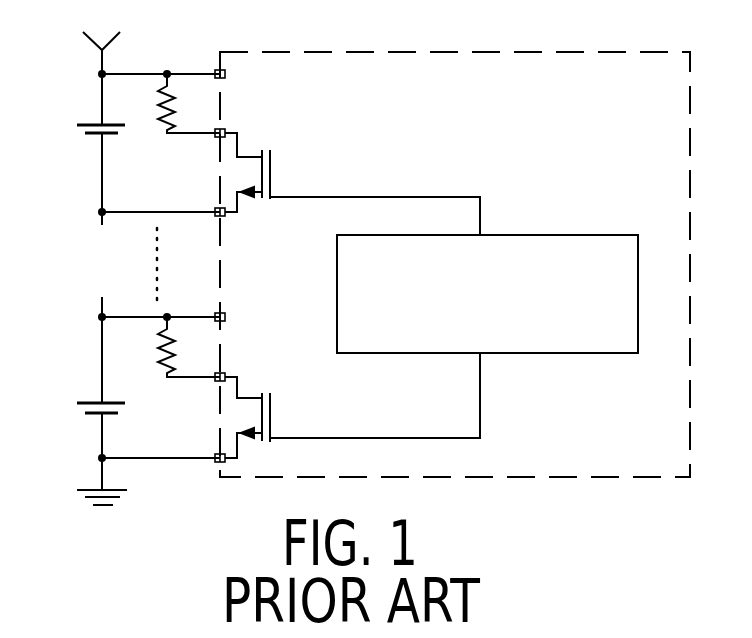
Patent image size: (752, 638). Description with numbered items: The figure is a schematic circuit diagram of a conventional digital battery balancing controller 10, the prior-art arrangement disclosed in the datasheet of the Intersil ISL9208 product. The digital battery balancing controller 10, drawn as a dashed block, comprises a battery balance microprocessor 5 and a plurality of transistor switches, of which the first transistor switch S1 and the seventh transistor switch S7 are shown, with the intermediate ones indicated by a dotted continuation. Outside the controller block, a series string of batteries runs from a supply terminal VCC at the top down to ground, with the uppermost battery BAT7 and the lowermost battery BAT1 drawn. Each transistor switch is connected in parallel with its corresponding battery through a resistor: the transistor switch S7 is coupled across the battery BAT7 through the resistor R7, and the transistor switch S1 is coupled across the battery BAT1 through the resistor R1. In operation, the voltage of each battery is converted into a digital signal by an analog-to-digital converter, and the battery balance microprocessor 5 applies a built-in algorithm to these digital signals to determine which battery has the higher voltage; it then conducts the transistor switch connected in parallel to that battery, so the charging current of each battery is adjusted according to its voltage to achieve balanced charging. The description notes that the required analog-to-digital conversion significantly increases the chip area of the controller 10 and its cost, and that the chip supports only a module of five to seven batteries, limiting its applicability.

The digital battery balancing controller 10 is at (613, 57).
The battery balance microprocessor 5 is at (483, 242).
The supply voltage terminal VCC is at (103, 37).
The battery BAT7 is at (85, 149).
The battery BAT1 is at (85, 393).
The resistor R7 is at (189, 103).
The resistor R1 is at (189, 347).
The transistor switch S7 is at (352, 171).
The transistor switch S1 is at (352, 405).